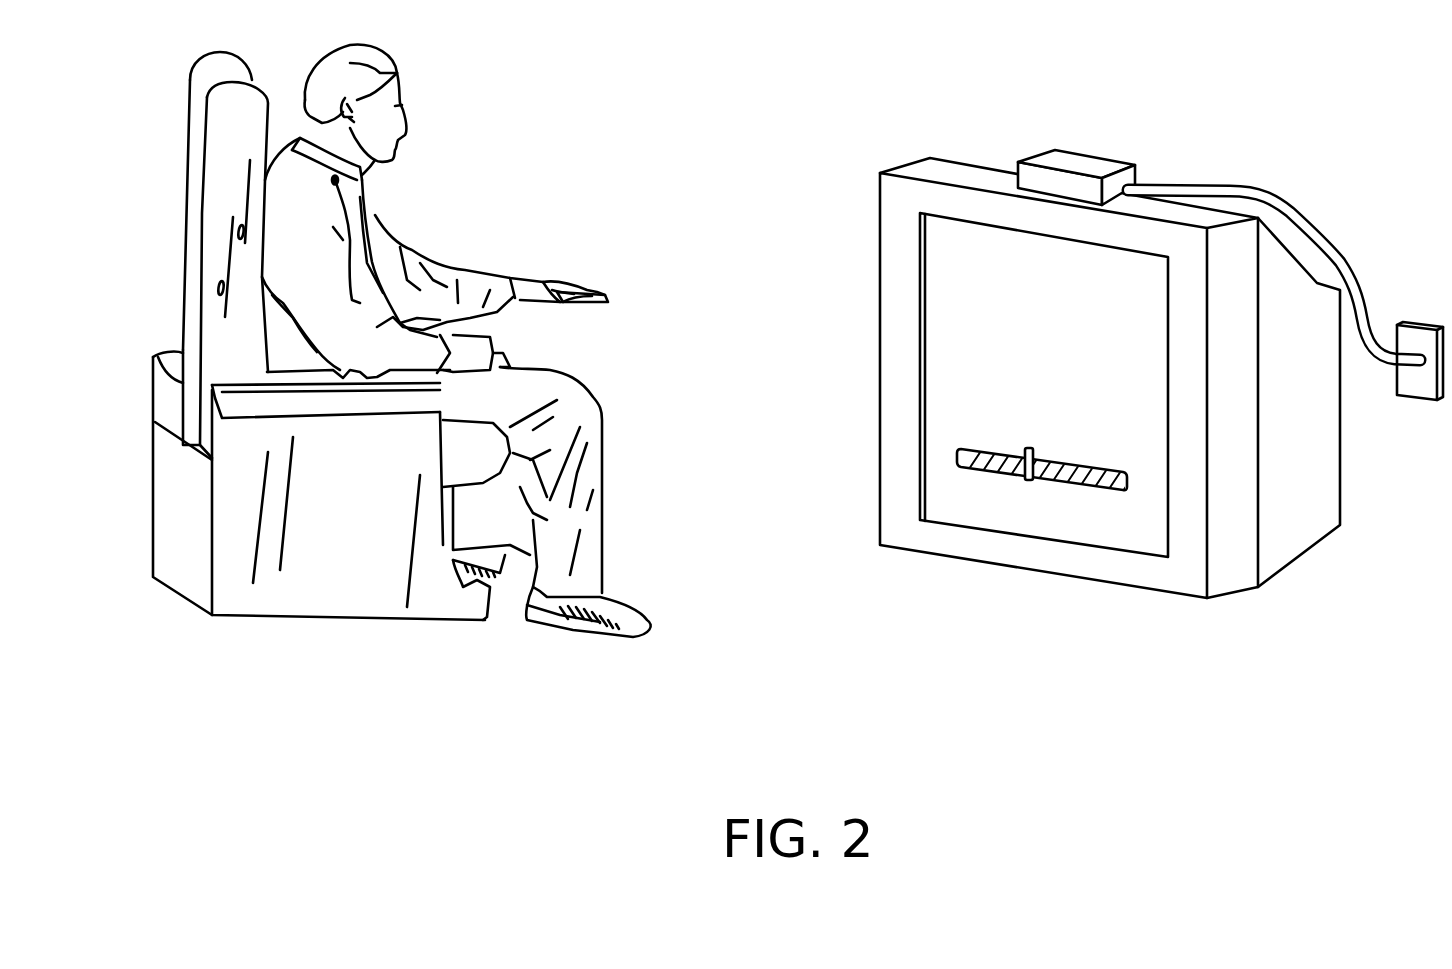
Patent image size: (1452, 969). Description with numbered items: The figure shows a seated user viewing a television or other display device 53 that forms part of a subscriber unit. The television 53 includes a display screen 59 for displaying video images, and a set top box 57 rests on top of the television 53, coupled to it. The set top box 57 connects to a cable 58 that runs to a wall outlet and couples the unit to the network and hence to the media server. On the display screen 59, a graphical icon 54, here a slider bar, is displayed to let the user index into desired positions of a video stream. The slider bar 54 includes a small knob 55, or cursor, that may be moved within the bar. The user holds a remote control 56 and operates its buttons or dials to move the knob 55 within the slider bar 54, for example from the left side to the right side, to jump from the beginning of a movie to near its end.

The television or other display device 53 is at (897, 170).
The graphical icon 54 is at (1092, 485).
The knob 55 is at (1028, 483).
The remote control 56 is at (603, 283).
The set top box 57 is at (1092, 168).
The cable 58 is at (1307, 215).
The display screen 59 is at (943, 365).